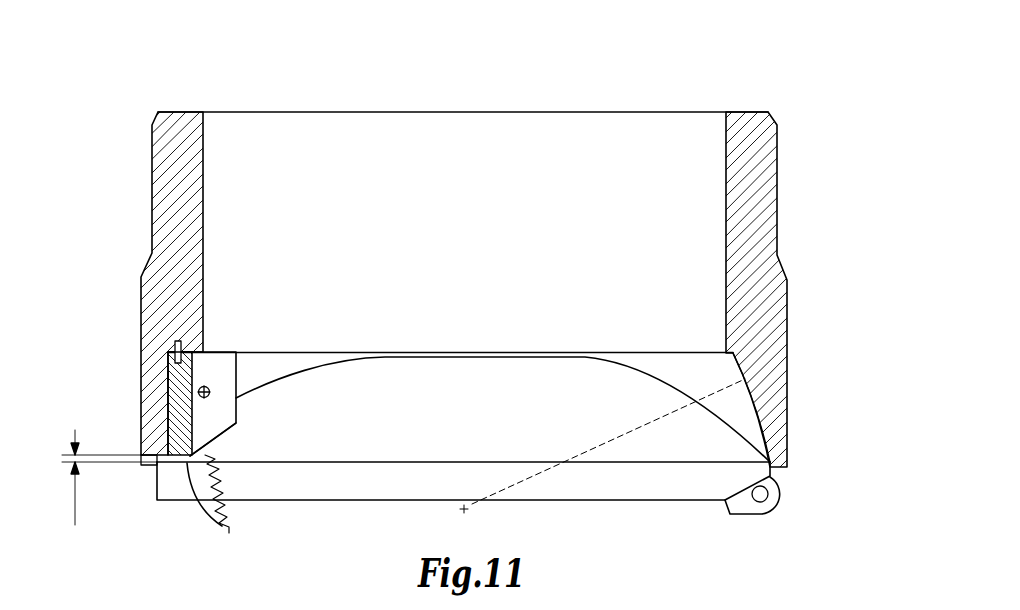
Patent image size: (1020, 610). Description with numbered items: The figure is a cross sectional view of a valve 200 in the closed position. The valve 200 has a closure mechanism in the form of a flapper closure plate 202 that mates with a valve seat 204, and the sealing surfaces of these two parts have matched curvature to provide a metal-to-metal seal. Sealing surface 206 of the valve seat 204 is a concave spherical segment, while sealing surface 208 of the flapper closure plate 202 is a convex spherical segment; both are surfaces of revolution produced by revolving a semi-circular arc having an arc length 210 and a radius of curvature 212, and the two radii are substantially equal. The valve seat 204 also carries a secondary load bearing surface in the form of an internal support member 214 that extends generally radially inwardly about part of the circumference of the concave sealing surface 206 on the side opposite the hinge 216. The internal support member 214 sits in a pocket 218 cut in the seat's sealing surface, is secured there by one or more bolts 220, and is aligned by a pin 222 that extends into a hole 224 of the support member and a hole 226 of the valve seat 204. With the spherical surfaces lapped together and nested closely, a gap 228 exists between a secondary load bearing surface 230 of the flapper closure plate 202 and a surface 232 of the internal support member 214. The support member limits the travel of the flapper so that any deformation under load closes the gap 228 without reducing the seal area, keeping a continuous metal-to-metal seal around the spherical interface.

The valve 200 is at (594, 94).
The flapper closure plate 202 is at (636, 492).
The valve seat 204 is at (176, 130).
The sealing surface 206 is at (755, 395).
The sealing surface 208 is at (770, 462).
The arc length 210 is at (762, 420).
The radius of curvature 212 is at (617, 438).
The internal support member 214 is at (222, 366).
The hinge 216 is at (760, 506).
The pocket 218 is at (168, 372).
The bolts 220 is at (198, 393).
The pin 222 is at (174, 348).
The hole 224 is at (172, 350).
The hole 226 is at (185, 347).
The gap 228 is at (107, 492).
The secondary load bearing surface 230 is at (219, 507).
The surface 232 is at (216, 438).